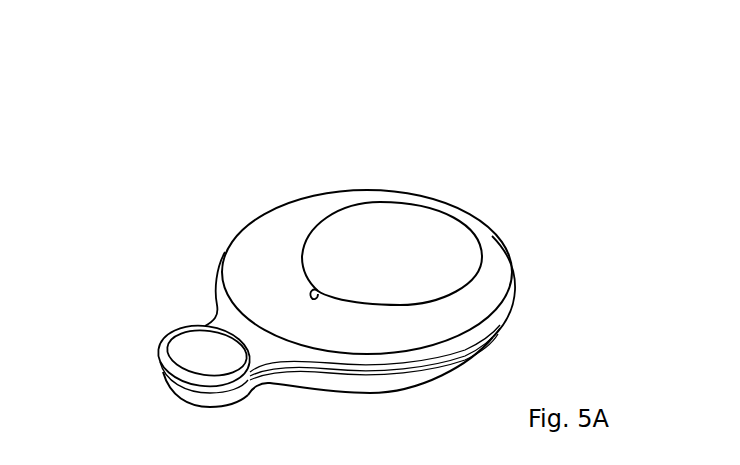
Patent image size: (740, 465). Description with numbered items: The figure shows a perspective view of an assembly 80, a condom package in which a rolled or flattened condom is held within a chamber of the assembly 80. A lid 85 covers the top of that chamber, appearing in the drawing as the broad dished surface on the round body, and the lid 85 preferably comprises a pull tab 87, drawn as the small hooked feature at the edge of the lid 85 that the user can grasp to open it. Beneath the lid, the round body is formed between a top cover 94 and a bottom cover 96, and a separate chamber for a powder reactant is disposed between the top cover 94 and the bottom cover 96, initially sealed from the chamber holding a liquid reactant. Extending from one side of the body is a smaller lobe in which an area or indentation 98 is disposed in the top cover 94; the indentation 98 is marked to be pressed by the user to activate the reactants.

The assembly 80 is at (348, 108).
The lid 85 is at (408, 232).
The pull tab 87 is at (313, 292).
The top cover 94 is at (233, 324).
The bottom cover 96 is at (237, 395).
The indentation 98 is at (190, 361).